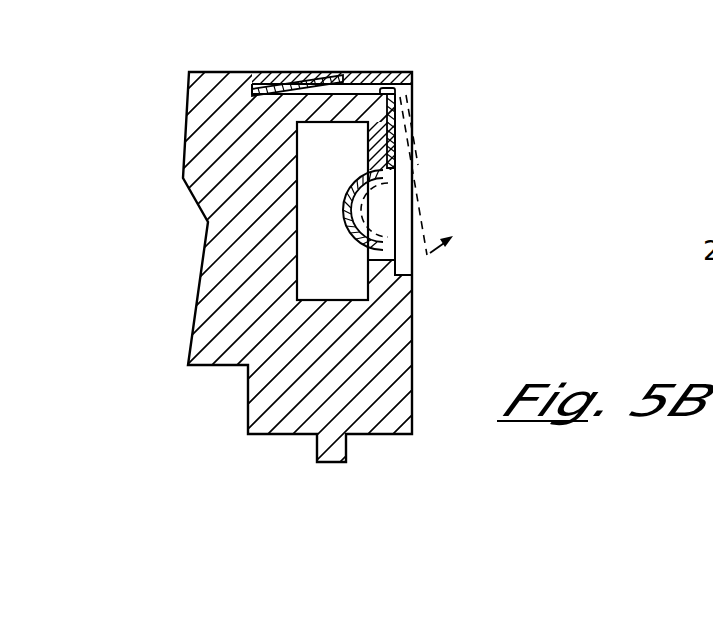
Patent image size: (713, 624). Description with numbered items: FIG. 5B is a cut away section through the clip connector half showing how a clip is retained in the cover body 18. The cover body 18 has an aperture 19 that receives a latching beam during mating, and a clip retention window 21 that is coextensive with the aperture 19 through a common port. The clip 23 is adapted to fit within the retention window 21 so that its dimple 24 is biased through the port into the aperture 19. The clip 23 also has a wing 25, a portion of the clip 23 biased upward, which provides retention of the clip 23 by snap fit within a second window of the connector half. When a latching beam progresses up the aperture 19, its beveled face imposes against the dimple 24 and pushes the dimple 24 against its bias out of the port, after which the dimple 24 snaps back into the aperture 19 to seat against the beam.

The cover body 18 is at (412, 352).
The aperture 19 is at (308, 273).
The clip retention window 21 is at (386, 202).
The clip 23 is at (396, 99).
The dimple 24 is at (347, 224).
The wing 25 is at (340, 77).